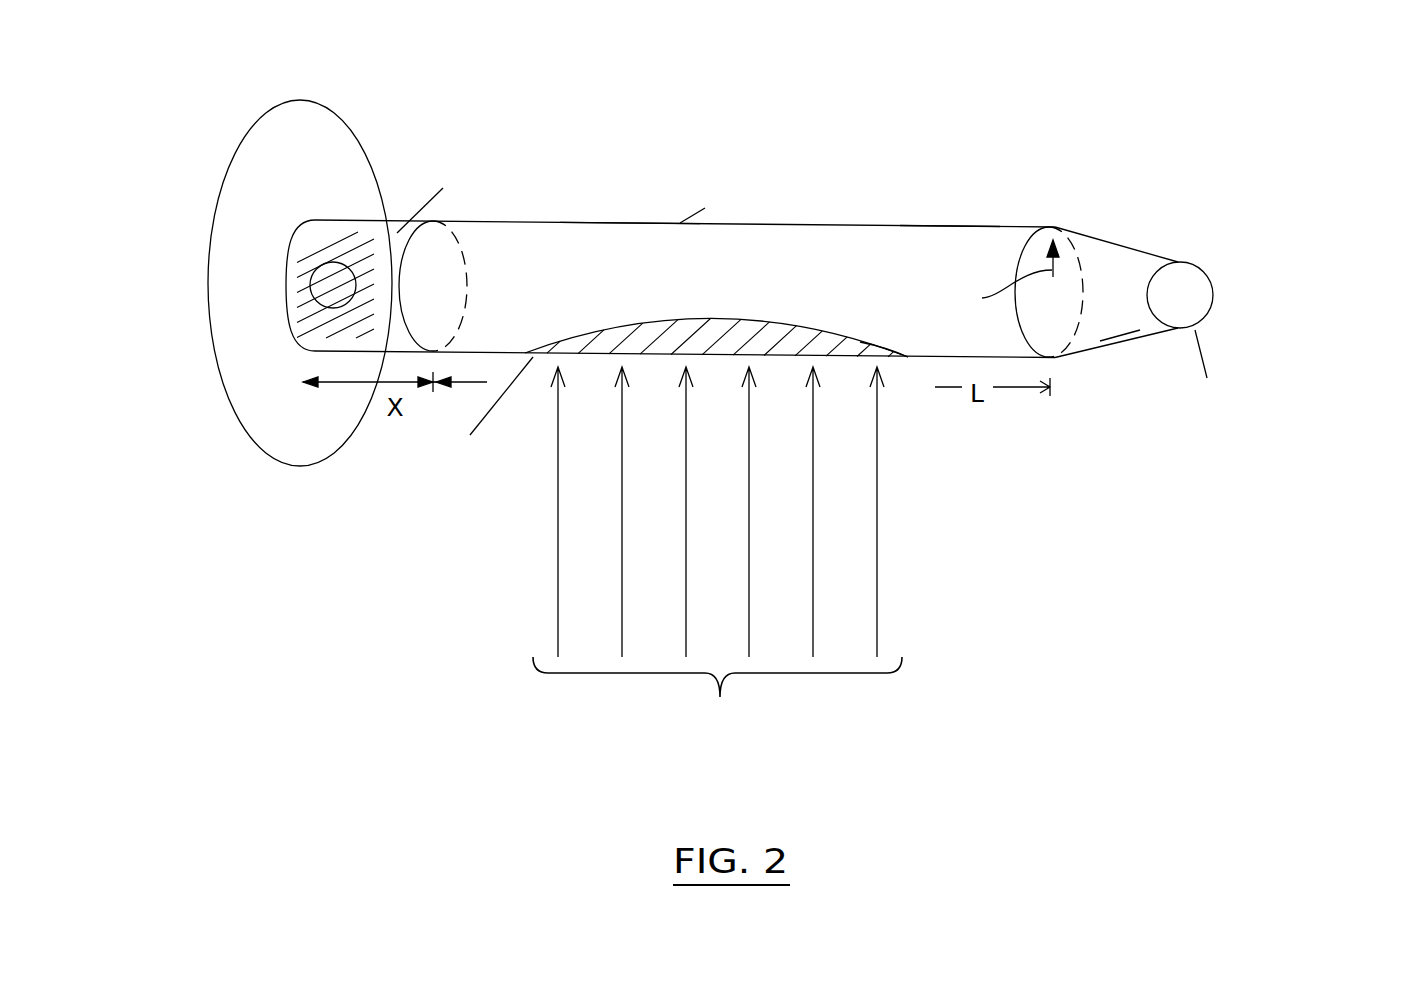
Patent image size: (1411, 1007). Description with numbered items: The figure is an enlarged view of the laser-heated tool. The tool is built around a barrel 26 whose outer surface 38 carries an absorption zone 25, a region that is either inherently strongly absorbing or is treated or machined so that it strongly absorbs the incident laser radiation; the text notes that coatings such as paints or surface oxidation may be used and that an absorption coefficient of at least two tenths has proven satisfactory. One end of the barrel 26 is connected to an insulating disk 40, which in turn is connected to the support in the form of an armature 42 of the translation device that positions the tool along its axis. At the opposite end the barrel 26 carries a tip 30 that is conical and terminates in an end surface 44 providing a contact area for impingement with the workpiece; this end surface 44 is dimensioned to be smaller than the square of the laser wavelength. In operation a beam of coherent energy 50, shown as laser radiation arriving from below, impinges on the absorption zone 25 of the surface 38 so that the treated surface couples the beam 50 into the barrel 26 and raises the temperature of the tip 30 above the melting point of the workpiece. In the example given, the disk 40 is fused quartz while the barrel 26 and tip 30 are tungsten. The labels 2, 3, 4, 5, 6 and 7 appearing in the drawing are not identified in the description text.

The thermal conductor 2 is at (685, 252).
The absorber 3 is at (637, 421).
The end of thermal conductor at point B 4 is at (1018, 273).
The tapered tip portion 5 is at (1116, 292).
The rear end portion of thermal conductor 6 is at (330, 265).
The workpiece 7 is at (1298, 298).
The absorption zone 25 is at (903, 350).
The barrel 26 is at (945, 240).
The tip 30 is at (1105, 330).
The outer surface 38 is at (611, 224).
The insulating disk 40 is at (390, 233).
The armature 42 is at (253, 127).
The end surface 44 is at (1183, 283).
The beam of coherent energy 50 is at (577, 680).